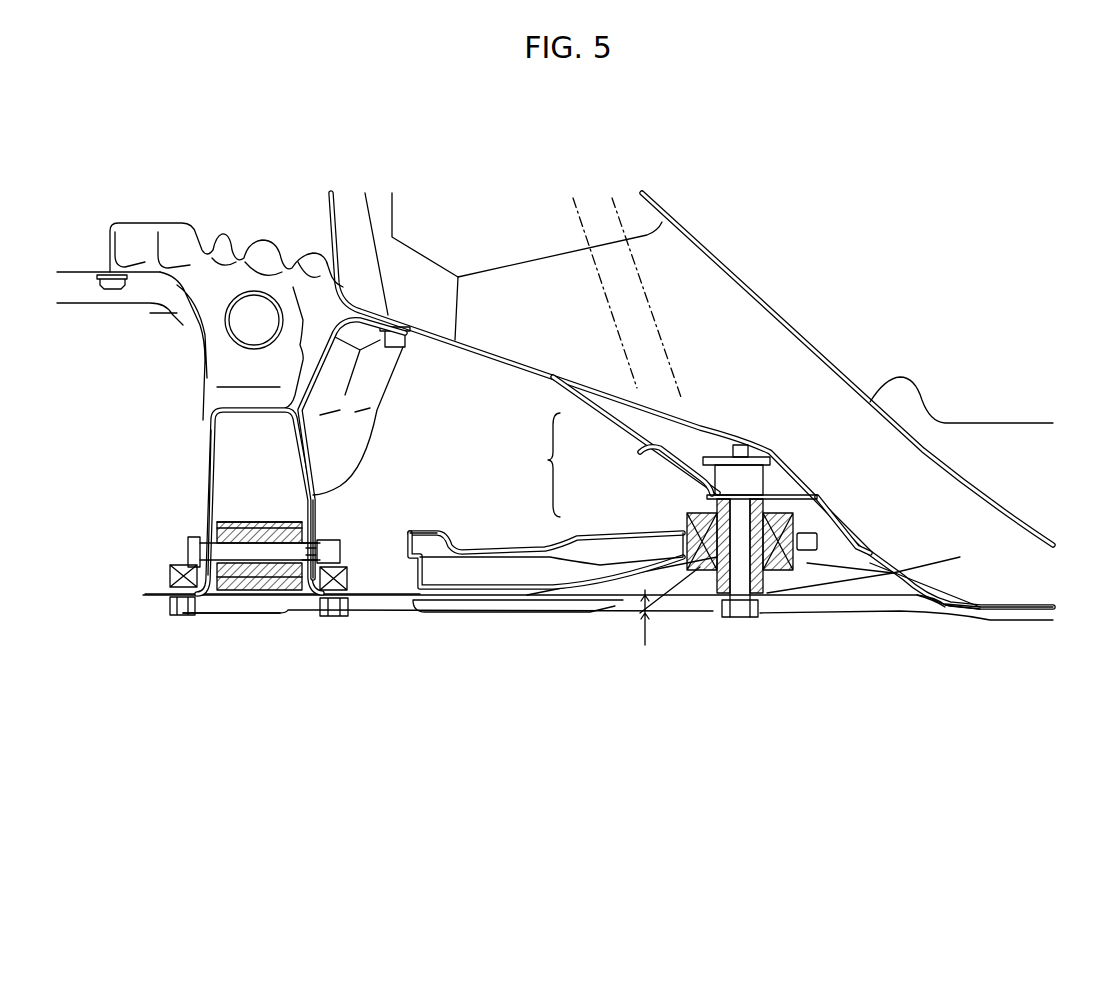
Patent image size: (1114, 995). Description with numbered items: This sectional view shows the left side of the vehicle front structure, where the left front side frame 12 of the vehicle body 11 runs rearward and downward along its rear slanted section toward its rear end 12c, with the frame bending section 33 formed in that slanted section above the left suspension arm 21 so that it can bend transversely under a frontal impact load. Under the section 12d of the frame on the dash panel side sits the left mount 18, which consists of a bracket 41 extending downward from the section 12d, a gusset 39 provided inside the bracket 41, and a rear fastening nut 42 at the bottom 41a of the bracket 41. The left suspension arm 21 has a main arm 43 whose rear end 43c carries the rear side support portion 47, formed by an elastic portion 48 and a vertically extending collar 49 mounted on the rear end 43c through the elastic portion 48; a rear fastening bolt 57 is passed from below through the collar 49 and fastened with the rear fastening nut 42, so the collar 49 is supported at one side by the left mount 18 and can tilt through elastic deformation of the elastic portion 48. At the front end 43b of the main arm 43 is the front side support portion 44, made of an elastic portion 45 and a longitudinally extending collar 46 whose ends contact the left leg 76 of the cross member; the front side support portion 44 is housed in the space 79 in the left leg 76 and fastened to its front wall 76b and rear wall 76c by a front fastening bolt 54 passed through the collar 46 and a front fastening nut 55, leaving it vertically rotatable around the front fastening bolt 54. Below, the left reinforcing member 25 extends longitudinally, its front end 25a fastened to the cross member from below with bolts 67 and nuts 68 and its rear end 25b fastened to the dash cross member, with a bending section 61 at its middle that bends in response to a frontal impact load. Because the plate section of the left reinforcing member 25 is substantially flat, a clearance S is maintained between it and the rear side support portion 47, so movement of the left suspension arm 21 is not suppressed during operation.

The vehicle body 11 is at (545, 190).
The left front side frame 12 is at (702, 240).
The rear end 12c is at (1010, 593).
The section on the side of the dash panel 12d is at (778, 353).
The frame bending section 33 is at (648, 303).
The left mount 18 is at (696, 465).
The bracket 41 is at (623, 432).
The gusset 39 is at (653, 458).
The rear fastening nut 42 is at (722, 477).
The bottom of the bracket 41a is at (778, 490).
The rear fastening bolt 57 is at (738, 612).
The collar 49 is at (760, 582).
The elastic portion 48 is at (807, 567).
The rear side support portion 47 is at (807, 520).
The rear end of the main arm 43c is at (817, 545).
The left reinforcing member 25 is at (520, 628).
The front end of the left reinforcing member 25a is at (252, 608).
The rear end of the left reinforcing member 25b is at (913, 593).
The bending section 61 is at (580, 607).
The clearance S is at (642, 627).
The main arm 43 is at (492, 533).
The front end of the main arm 43b is at (278, 520).
The left suspension arm 21 is at (457, 530).
The space 79 is at (245, 437).
The left leg 76 is at (318, 455).
The front wall 76b is at (205, 520).
The rear wall 76c is at (312, 502).
The front side support portion 44 is at (243, 518).
The elastic portion 45 is at (247, 580).
The collar 46 is at (287, 573).
The front fastening bolt 54 is at (190, 552).
The front fastening nut 55 is at (318, 548).
The nuts 68 is at (175, 582).
The bolts 67 is at (178, 612).